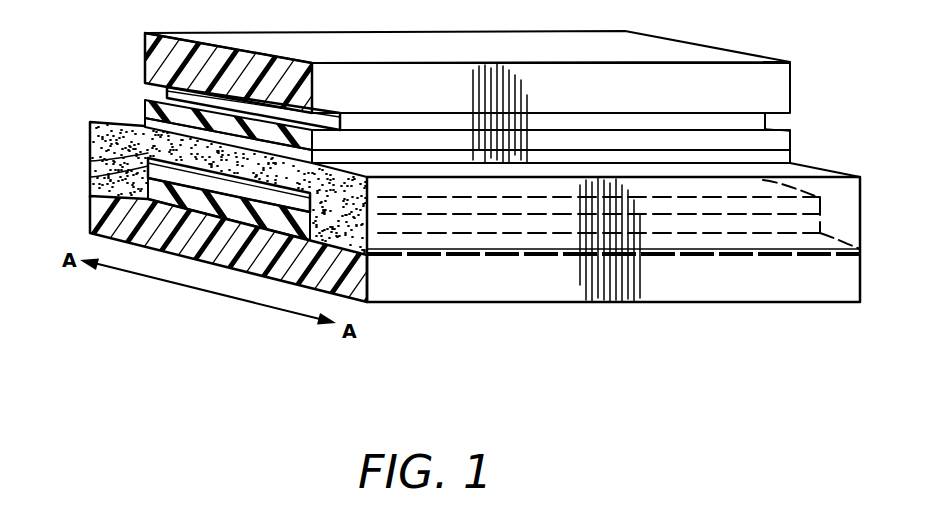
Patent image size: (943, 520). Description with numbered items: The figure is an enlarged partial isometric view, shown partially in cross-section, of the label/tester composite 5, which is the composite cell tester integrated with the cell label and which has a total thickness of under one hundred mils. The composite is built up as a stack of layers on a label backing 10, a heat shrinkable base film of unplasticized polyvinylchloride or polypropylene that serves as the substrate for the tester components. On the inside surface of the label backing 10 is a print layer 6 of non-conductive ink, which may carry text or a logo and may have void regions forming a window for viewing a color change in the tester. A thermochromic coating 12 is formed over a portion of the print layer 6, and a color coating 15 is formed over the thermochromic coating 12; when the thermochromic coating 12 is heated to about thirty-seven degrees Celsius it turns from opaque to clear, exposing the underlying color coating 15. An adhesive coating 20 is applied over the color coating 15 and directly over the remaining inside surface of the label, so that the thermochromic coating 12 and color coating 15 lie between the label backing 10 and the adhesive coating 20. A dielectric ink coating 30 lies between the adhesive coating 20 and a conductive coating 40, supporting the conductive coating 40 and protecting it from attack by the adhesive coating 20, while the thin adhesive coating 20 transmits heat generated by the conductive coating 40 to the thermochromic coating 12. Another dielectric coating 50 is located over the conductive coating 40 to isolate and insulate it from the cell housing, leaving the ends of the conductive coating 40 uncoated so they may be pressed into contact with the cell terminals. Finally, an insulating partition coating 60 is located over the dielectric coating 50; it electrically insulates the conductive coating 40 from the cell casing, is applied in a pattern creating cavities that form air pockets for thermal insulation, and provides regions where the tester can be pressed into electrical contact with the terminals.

The insulating partition coating 60 is at (144, 53).
The dielectric coating 50 is at (168, 87).
The conductive coating 40 is at (143, 100).
The dielectric ink coating 30 is at (145, 117).
The adhesive coating 20 is at (90, 130).
The color coating 15 is at (90, 157).
The thermochromic coating 12 is at (90, 177).
The label backing 10 is at (90, 211).
The print layer 6 is at (858, 253).
The label/tester composite 5 is at (662, 307).